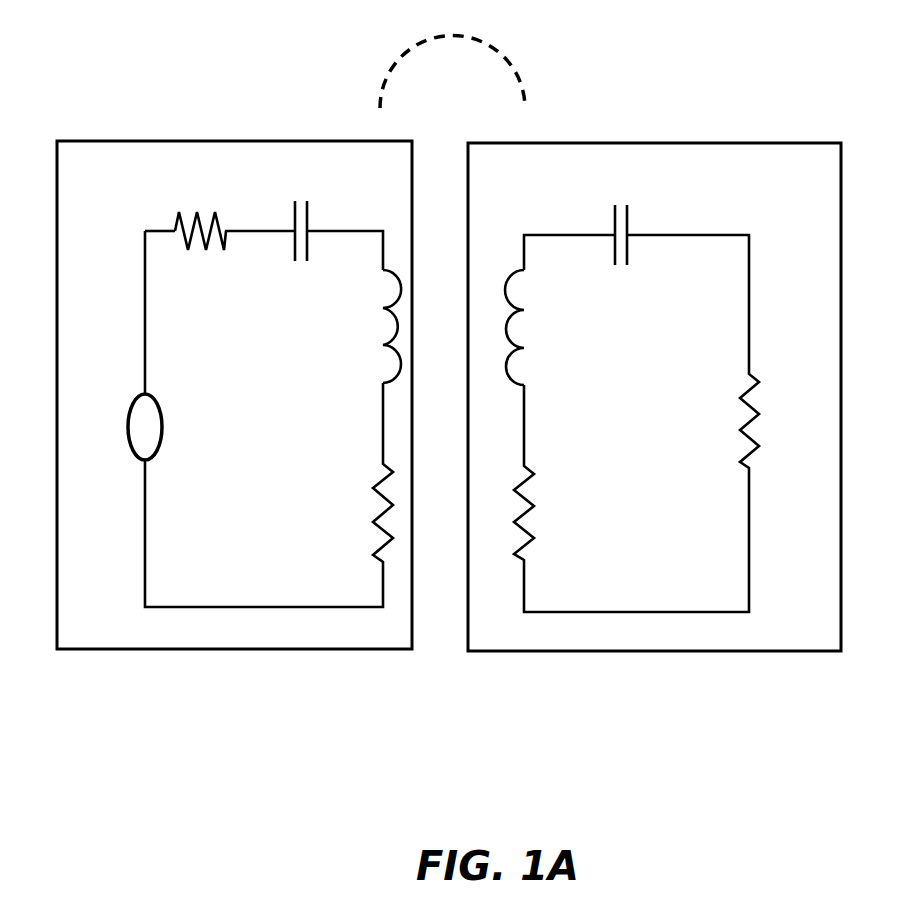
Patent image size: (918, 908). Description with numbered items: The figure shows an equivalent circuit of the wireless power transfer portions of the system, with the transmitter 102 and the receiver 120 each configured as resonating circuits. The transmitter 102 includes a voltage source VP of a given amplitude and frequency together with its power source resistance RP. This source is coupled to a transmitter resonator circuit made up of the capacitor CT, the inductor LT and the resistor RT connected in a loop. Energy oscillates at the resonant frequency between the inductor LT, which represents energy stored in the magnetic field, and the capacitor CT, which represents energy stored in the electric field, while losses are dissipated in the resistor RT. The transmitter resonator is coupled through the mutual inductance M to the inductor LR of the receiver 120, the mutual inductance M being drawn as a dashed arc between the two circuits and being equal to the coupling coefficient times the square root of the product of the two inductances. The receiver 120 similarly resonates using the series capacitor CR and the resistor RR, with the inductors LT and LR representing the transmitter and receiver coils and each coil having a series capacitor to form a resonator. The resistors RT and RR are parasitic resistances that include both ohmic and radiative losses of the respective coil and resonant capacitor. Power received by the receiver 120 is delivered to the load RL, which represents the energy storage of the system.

The transmitter 102 is at (108, 189).
The receiver 120 is at (806, 192).
The mutual inductance M is at (452, 71).
The power source resistance RP is at (200, 205).
The transmitter capacitor CT is at (301, 210).
The transmitter inductor LT is at (374, 326).
The transmitter resistor RT is at (368, 513).
The voltage source VP is at (130, 427).
The receiver capacitor CR is at (622, 216).
The receiver inductor LR is at (534, 327).
The receiver resistor RR is at (540, 512).
The load RL is at (766, 420).